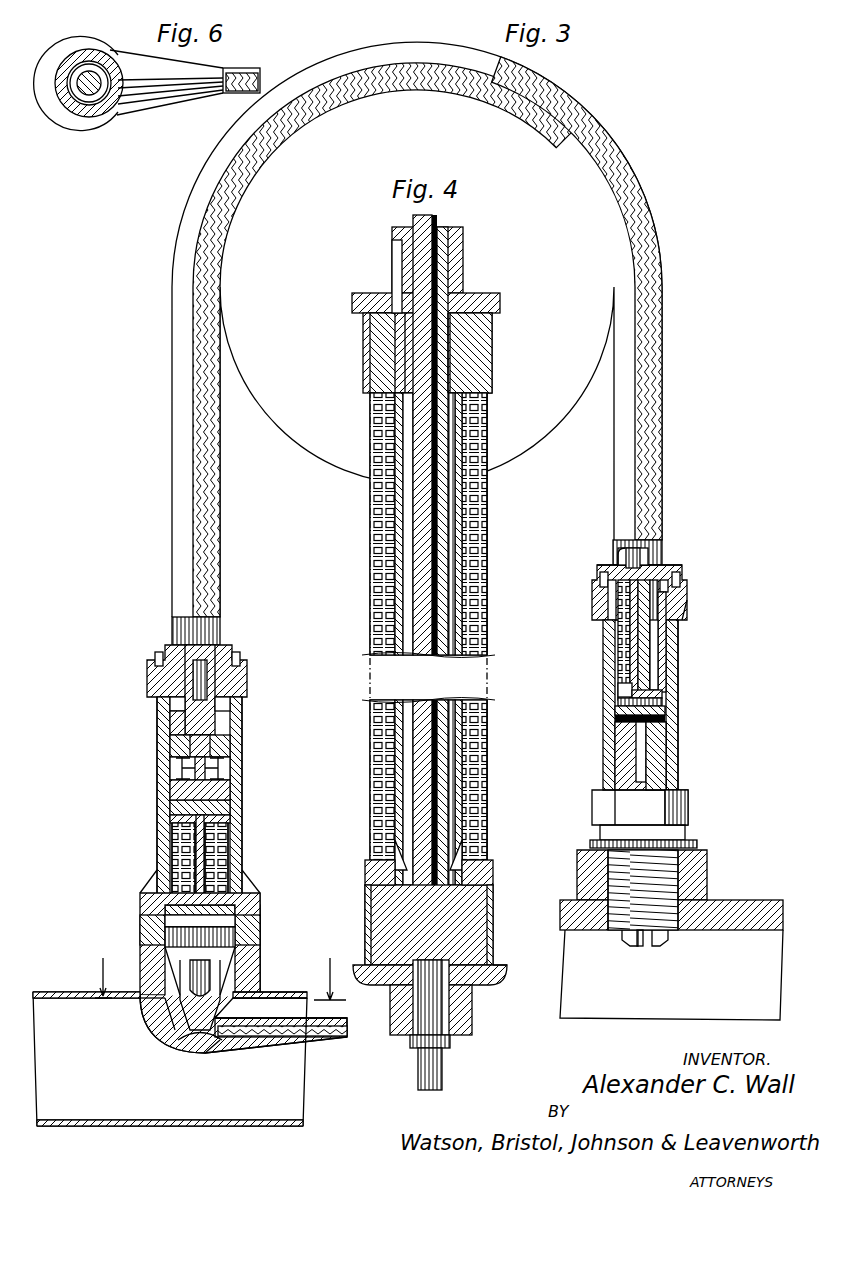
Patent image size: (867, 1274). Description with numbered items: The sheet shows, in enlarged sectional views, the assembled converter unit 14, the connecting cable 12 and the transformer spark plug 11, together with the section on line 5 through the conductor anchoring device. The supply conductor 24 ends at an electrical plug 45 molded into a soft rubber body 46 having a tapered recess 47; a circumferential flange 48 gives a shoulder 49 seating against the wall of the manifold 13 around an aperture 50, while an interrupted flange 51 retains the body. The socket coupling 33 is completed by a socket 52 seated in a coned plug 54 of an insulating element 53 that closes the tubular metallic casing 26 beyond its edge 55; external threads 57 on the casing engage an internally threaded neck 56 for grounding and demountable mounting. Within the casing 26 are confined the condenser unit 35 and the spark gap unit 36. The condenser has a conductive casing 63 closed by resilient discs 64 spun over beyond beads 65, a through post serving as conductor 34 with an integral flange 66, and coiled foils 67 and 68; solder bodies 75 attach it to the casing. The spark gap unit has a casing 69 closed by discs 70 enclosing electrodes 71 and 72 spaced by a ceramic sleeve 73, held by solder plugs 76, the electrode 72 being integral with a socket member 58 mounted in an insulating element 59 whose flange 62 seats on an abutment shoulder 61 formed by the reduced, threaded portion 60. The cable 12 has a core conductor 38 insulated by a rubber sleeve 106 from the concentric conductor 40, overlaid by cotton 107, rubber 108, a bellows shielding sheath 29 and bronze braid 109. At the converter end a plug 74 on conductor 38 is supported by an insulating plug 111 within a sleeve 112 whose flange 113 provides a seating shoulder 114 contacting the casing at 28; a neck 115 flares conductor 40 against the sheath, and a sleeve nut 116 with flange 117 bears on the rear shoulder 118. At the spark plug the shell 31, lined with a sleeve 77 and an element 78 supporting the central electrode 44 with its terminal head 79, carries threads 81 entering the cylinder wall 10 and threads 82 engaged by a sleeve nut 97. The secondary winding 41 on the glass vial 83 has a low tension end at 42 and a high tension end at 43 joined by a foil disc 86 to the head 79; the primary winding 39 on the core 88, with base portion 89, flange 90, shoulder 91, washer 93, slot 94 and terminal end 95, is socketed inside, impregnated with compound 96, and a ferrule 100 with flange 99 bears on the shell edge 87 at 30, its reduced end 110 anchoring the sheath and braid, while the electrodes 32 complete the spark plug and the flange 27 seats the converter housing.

In FIG. 3, the section line 5— 5 is at (214, 979).
In FIG. 3, the wall of engine cylinder 10 is at (732, 906).
In FIG. 3, the transformer spark plug 11 is at (689, 706).
In FIG. 3, the connecting cable 12 is at (659, 208).
In FIG. 4, the connecting cable 12 is at (496, 503).
In FIG. 3, the manifold 13 is at (112, 1128).
In FIG. 3, the converter unit 14 is at (149, 798).
In FIG. 6, the conductor 24 is at (241, 72).
In FIG. 3, the conductor 24 is at (205, 1053).
In FIG. 3, the tubular metallic casing 26 is at (243, 816).
In FIG. 3, the lower housing flange 27 is at (146, 921).
In FIG. 3, the electrical contact point 28 is at (240, 656).
In FIG. 4, the shielding sheath 29 is at (485, 801).
In FIG. 3, the connection point 30 is at (599, 576).
In FIG. 3, the metallic casing or shell 31 is at (677, 672).
In FIG. 3, the spark electrodes 32 is at (666, 941).
In FIG. 3, the socket coupling 33 is at (175, 1066).
In FIG. 3, the conductor 34 is at (196, 860).
In FIG. 3, the condenser unit 35 is at (246, 866).
In FIG. 3, the spark gap unit 36 is at (237, 781).
In FIG. 3, the core conductor 38 is at (614, 646).
In FIG. 4, the core conductor 38 is at (440, 698).
In FIG. 3, the primary winding 39 is at (618, 631).
In FIG. 4, the primary winding 39 is at (462, 236).
In FIG. 4, the concentric conductor 40 is at (462, 845).
In FIG. 3, the secondary winding 41 is at (676, 641).
In FIG. 3, the low tension end 42 is at (670, 586).
In FIG. 3, the high tension end 43 is at (625, 712).
In FIG. 3, the central electrode 44 is at (642, 947).
In FIG. 6, the electrical plug 45 is at (70, 118).
In FIG. 3, the electrical plug 45 is at (180, 1041).
In FIG. 6, the body of resilient material 46 is at (108, 50).
In FIG. 3, the body of resilient material 46 is at (197, 1066).
In FIG. 6, the tapered recess 47 is at (115, 108).
In FIG. 3, the tapered recess 47 is at (173, 1030).
In FIG. 3, the circumferential flange 48 is at (258, 984).
In FIG. 3, the circumambient shoulder 49 is at (150, 1000).
In FIG. 3, the aperture 50 is at (157, 1006).
In FIG. 6, the interrupted flange 51 is at (96, 125).
In FIG. 3, the interrupted flange 51 is at (168, 1014).
In FIG. 3, the socket 52 is at (258, 951).
In FIG. 3, the insulating closing element 53 is at (150, 970).
In FIG. 3, the coned plug 54 is at (252, 996).
In FIG. 3, the casing edge 55 is at (258, 966).
In FIG. 3, the threaded neck 56 is at (150, 958).
In FIG. 3, the external threads 57 is at (146, 942).
In FIG. 3, the socket member 58 is at (228, 712).
In FIG. 3, the insulating closing element 59 is at (220, 696).
In FIG. 3, the reduced necked portion 60 is at (240, 672).
In FIG. 3, the abutment shoulder 61 is at (160, 703).
In FIG. 3, the flange 62 is at (165, 713).
In FIG. 3, the condenser casing 63 is at (246, 886).
In FIG. 3, the insulating discs 64 is at (256, 936).
In FIG. 3, the beads 65 is at (256, 920).
In FIG. 3, the integral flange 66 is at (168, 835).
In FIG. 3, the foil 67 is at (172, 882).
In FIG. 3, the foil 68 is at (172, 896).
In FIG. 3, the spark gap casing 69 is at (232, 736).
In FIG. 3, the insulating end discs 70 is at (235, 802).
In FIG. 3, the gap electrode 71 is at (165, 776).
In FIG. 4, the gap electrode 71 is at (420, 1076).
In FIG. 3, the gap electrode 72 is at (165, 748).
In FIG. 3, the glass or ceramic sleeve 73 is at (235, 766).
In FIG. 3, the plug 74 is at (168, 692).
In FIG. 3, the solder bodies 75 is at (240, 848).
In FIG. 3, the solder plugs 76 is at (232, 754).
In FIG. 3, the insulating sleeve 77 is at (664, 661).
In FIG. 3, the insulating element 78 is at (668, 742).
In FIG. 3, the terminal head 79 is at (622, 727).
In FIG. 3, the external threads 81 is at (690, 868).
In FIG. 3, the external threads 82 is at (688, 606).
In FIG. 3, the glass cup or vial 83 is at (670, 631).
In FIG. 3, the tin foil disc 86 is at (668, 717).
In FIG. 3, the shell end edge 87 is at (605, 590).
In FIG. 3, the core 88 is at (624, 661).
In FIG. 4, the core 88 is at (464, 266).
In FIG. 3, the base portion 89 is at (619, 556).
In FIG. 4, the base portion 89 is at (450, 374).
In FIG. 3, the flange 90 is at (682, 576).
In FIG. 3, the core shoulder 91 is at (668, 570).
In FIG. 4, the core shoulder 91 is at (492, 326).
In FIG. 3, the end plate or washer 93 is at (620, 701).
In FIG. 3, the slot 94 is at (620, 684).
In FIG. 3, the primary end terminal 95 is at (624, 565).
In FIG. 4, the primary end terminal 95 is at (395, 342).
In FIG. 3, the impregnating compound 96 is at (664, 695).
In FIG. 3, the sleeve nut 97 is at (593, 605).
In FIG. 4, the ferrule flange 99 is at (500, 301).
In FIG. 3, the sleeve or ferrule 100 is at (664, 549).
In FIG. 4, the sleeve or ferrule 100 is at (492, 349).
In FIG. 4, the rubber insulating sleeve 106 is at (442, 478).
In FIG. 4, the cotton covering 107 is at (470, 560).
In FIG. 4, the rubber layer 108 is at (470, 585).
In FIG. 3, the protective bronze braid 109 is at (658, 441).
In FIG. 4, the protective bronze braid 109 is at (488, 608).
In FIG. 4, the reduced end portion 110 is at (487, 416).
In FIG. 4, the insulating plug 111 is at (466, 945).
In FIG. 4, the metallic sleeve 112 is at (493, 916).
In FIG. 4, the sleeve flange 113 is at (500, 976).
In FIG. 4, the seating shoulder 114 is at (490, 988).
In FIG. 4, the neck 115 is at (490, 885).
In FIG. 3, the sleeve nut 116 is at (153, 652).
In FIG. 3, the nut flange 117 is at (232, 646).
In FIG. 4, the rear shoulder 118 is at (500, 965).